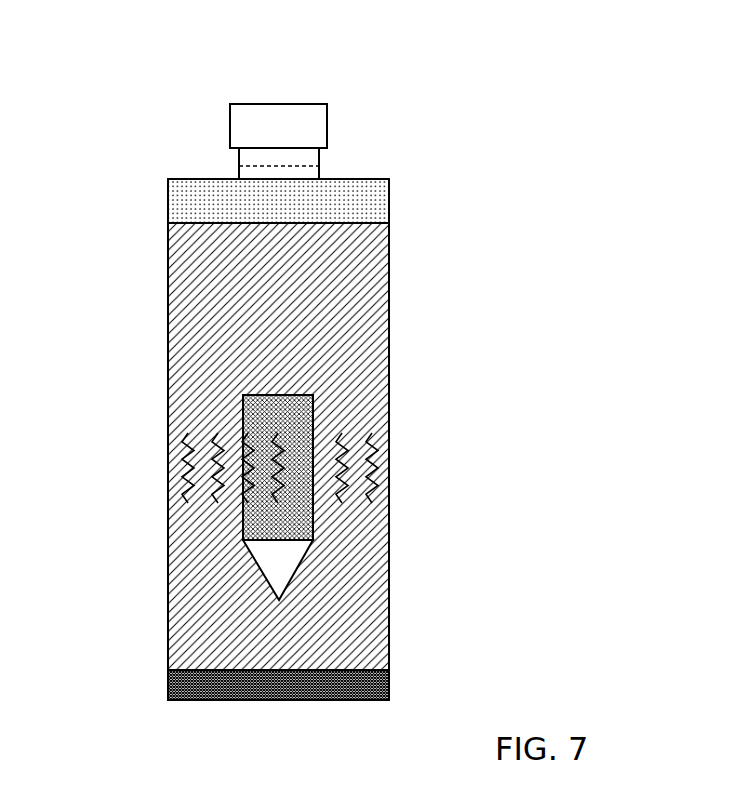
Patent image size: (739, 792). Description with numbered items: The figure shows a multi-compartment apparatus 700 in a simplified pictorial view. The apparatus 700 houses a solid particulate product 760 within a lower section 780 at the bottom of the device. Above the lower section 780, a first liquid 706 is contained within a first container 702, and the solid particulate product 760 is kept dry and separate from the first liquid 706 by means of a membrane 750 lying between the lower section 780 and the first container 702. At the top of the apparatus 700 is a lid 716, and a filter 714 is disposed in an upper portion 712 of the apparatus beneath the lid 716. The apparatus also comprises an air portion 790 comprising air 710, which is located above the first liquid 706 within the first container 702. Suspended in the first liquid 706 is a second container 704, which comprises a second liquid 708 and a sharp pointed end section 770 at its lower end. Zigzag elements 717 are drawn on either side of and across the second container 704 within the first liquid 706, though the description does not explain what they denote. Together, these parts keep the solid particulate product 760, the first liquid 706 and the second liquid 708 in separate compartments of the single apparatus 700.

The multi-compartment apparatus 700 is at (457, 78).
The first container 702 is at (389, 280).
The second container 704 is at (314, 523).
The first liquid 706 is at (188, 555).
The second liquid 708 is at (258, 410).
The air 710 is at (168, 212).
The upper portion 712 is at (320, 152).
The filter 714 is at (275, 166).
The lid 716 is at (328, 107).
The springs 717 is at (168, 470).
The membrane 750 is at (380, 665).
The solid particulate product 760 is at (287, 700).
The sharp pointed end section 770 is at (296, 574).
The lower section 780 is at (168, 694).
The air portion 790 is at (389, 200).